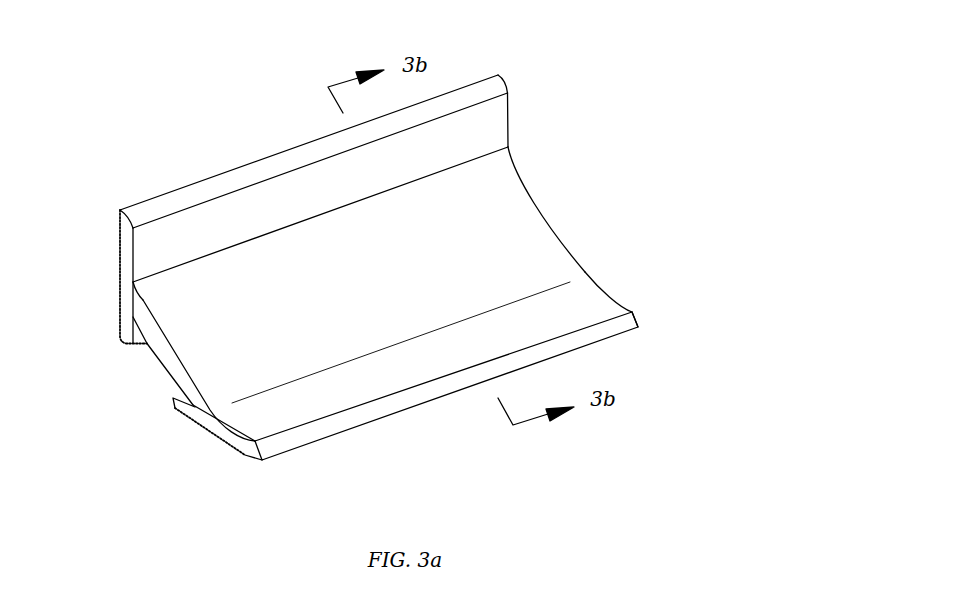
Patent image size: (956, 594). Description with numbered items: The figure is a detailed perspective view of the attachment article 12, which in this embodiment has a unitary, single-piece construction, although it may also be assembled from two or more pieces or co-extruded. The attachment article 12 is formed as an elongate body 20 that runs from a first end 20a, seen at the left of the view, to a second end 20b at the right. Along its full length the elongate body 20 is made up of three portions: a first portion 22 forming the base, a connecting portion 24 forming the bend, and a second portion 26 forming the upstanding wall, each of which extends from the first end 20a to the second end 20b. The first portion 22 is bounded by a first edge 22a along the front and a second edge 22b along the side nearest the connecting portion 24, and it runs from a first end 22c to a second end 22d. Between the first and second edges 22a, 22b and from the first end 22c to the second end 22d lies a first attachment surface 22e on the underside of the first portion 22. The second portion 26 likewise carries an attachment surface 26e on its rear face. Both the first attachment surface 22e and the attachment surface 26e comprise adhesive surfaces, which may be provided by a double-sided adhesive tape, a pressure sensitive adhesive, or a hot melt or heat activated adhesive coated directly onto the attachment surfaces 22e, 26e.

The attachment article 12 is at (163, 95).
The elongate body 20 is at (525, 166).
The first end 20a is at (162, 358).
The second end 20b is at (552, 222).
The first portion 22 is at (400, 373).
The first edge 22a is at (295, 443).
The second edge 22b is at (172, 397).
The first end 22c is at (230, 437).
The second end 22d is at (607, 292).
The first attachment surface 22e is at (245, 460).
The connecting portion 24 is at (173, 320).
The second portion 26 is at (242, 207).
The attachment surface 26e is at (118, 265).